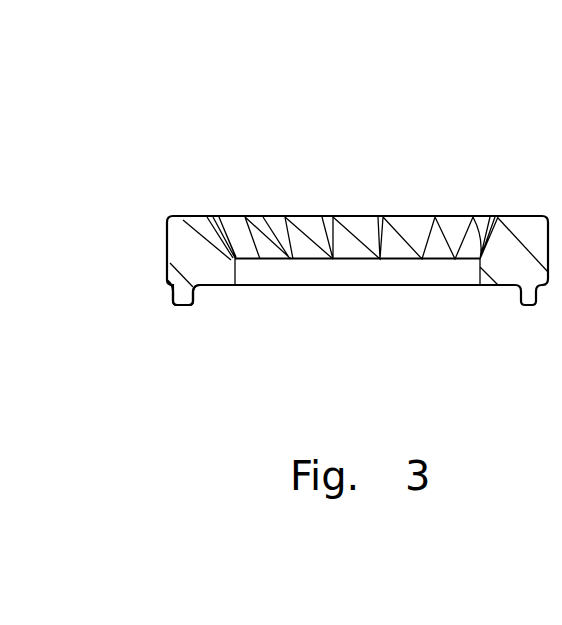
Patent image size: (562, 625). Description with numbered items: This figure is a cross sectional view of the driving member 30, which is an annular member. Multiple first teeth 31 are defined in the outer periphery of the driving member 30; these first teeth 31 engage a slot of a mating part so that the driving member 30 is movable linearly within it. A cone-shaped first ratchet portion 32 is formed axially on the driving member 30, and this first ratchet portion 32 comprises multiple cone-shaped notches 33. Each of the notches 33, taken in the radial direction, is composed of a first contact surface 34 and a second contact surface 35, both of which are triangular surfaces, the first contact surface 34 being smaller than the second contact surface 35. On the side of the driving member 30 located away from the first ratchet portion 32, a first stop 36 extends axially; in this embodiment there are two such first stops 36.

The driving member 30 is at (178, 128).
The first teeth 31 is at (167, 243).
The first ratchet portion 32 is at (445, 207).
The cone-shaped notches 33 is at (315, 252).
The first contact surface 34 is at (325, 222).
The second contact surface 35 is at (303, 222).
The first stop 36 is at (178, 304).